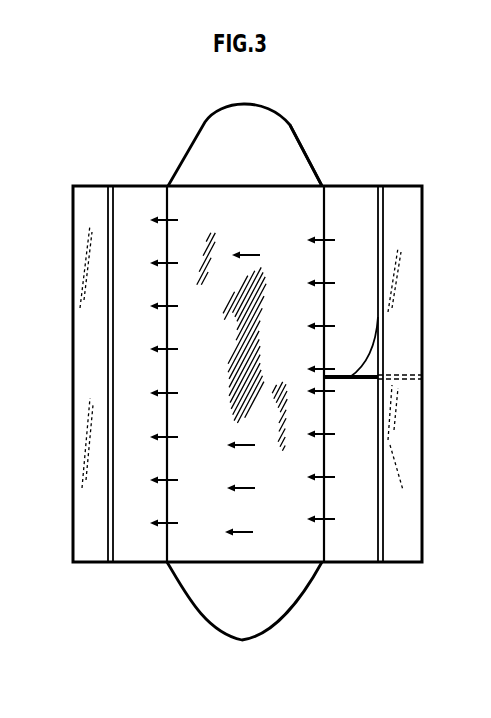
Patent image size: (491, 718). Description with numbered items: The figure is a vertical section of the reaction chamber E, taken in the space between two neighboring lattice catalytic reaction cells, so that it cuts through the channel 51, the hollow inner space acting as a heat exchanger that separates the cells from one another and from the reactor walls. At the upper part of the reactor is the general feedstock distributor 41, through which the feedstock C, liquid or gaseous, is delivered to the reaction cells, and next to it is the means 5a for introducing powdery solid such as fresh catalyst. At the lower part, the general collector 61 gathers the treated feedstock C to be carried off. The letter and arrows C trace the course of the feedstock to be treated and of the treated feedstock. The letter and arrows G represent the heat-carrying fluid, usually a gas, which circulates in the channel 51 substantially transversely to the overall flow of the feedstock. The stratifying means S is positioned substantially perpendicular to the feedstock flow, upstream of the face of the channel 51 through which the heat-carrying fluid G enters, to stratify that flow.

The general feedstock distributor 41 is at (222, 128).
The means for introducing the powdery solid 5a is at (282, 118).
The channel 51 is at (194, 542).
The general collector of the treated feedstock 61 is at (286, 600).
The feedstock C is at (251, 160).
The heat-carrying fluid G is at (253, 382).
The means for stratifying the flow of heat-carrying fluid S is at (378, 318).
The reaction chamber E is at (60, 527).